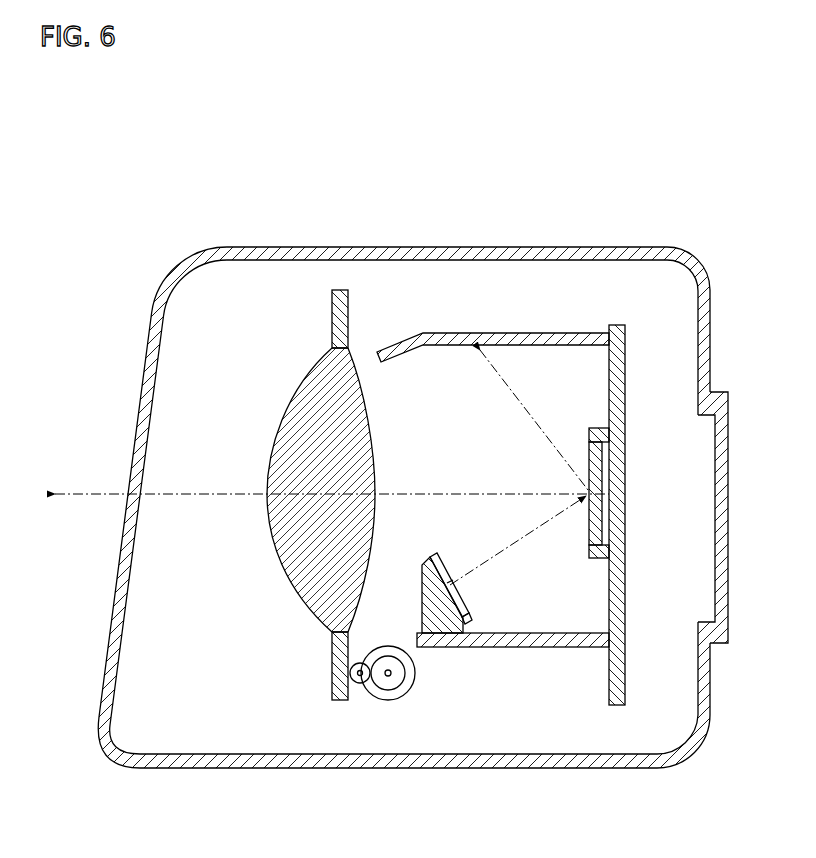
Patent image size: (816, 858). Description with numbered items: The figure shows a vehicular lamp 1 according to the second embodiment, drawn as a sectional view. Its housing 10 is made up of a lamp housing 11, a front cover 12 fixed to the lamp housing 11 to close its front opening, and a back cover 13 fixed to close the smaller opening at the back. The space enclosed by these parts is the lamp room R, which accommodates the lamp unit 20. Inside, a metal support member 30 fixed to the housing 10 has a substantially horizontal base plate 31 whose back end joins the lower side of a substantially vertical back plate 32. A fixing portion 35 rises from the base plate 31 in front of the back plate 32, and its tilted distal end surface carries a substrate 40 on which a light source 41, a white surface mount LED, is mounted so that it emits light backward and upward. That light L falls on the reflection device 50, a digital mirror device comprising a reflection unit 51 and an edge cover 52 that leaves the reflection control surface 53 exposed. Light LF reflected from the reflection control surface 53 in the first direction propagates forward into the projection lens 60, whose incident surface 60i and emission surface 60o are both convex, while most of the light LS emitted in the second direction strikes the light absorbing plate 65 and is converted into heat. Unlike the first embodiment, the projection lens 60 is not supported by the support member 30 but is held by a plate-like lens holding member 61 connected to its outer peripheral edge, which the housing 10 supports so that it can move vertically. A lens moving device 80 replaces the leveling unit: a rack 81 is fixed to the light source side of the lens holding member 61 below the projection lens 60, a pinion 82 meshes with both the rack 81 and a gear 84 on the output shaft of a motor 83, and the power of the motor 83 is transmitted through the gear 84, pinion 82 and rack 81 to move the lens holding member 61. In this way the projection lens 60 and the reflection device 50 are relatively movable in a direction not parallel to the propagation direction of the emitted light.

The head-up display device 1 is at (135, 145).
The housing 10 is at (438, 425).
The lamp housing 11 is at (318, 258).
The front cover 12 is at (243, 247).
The back cover 13 is at (698, 426).
The lamp unit 20 is at (320, 495).
The support member 30 is at (603, 325).
The base plate 31 is at (580, 647).
The back plate 32 is at (617, 483).
The fixing portion 35 is at (468, 624).
The substrate 40 is at (458, 594).
The light source 41 is at (466, 614).
The reflection device 50 is at (602, 490).
The reflection unit 51 is at (563, 540).
The edge cover 52 is at (606, 436).
The reflection control surface 53 is at (588, 558).
The projection lens 60 is at (320, 495).
The emission surface 60o is at (284, 567).
The incident surface 60i is at (370, 570).
The lens holding member 61 is at (328, 665).
The light absorbing plate 65 is at (437, 333).
The lens moving device 80 is at (390, 734).
The rack 81 is at (360, 693).
The pinion 82 is at (353, 686).
The motor 83 is at (393, 680).
The gear 84 is at (406, 690).
The light L is at (495, 575).
The light emitted toward the second direction LS is at (498, 378).
The light emitted in the first direction LF is at (172, 500).
The lamp room R is at (168, 733).